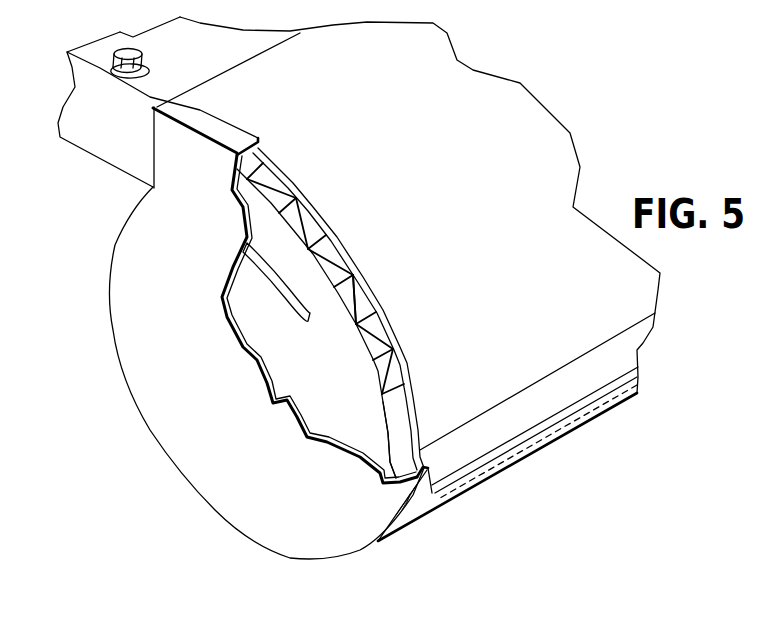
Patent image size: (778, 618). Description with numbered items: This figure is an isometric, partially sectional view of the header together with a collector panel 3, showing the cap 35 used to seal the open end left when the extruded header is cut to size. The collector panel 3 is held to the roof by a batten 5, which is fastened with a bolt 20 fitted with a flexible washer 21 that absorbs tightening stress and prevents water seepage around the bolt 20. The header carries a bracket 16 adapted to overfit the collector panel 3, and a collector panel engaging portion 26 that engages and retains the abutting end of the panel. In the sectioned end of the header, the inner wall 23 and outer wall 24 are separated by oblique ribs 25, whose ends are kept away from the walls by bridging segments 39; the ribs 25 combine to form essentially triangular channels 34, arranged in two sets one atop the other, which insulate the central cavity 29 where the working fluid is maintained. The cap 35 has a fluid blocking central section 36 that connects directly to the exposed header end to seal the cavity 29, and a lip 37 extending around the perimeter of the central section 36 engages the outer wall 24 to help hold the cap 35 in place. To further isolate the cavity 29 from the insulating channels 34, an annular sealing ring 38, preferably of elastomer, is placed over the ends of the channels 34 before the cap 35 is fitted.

The solar collector panel 3 is at (238, 43).
The batten 5 is at (93, 143).
The bracket 16 is at (298, 76).
The bolt 20 is at (128, 57).
The flexible washer 21 is at (152, 83).
The inner wall 23 is at (367, 362).
The outer wall 24 is at (383, 315).
The rib 25 is at (358, 288).
The collector panel engaging portion 26 is at (300, 44).
The central cavity 29 is at (303, 353).
The triangular channel 34 is at (323, 230).
The cap 35 is at (200, 493).
The central section 36 is at (277, 495).
The lip 37 is at (223, 132).
The annular sealing ring 38 is at (397, 425).
The bridging segment 39 is at (296, 190).